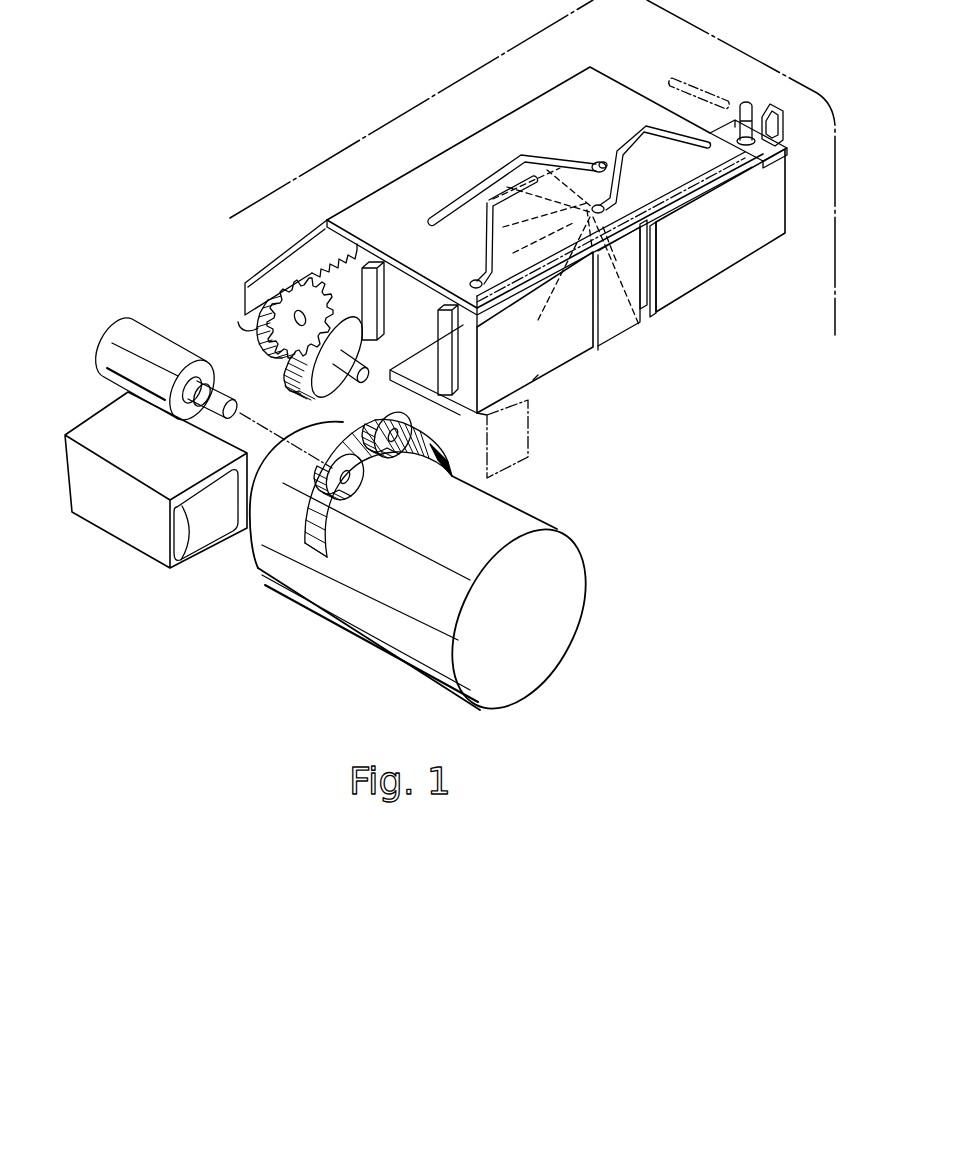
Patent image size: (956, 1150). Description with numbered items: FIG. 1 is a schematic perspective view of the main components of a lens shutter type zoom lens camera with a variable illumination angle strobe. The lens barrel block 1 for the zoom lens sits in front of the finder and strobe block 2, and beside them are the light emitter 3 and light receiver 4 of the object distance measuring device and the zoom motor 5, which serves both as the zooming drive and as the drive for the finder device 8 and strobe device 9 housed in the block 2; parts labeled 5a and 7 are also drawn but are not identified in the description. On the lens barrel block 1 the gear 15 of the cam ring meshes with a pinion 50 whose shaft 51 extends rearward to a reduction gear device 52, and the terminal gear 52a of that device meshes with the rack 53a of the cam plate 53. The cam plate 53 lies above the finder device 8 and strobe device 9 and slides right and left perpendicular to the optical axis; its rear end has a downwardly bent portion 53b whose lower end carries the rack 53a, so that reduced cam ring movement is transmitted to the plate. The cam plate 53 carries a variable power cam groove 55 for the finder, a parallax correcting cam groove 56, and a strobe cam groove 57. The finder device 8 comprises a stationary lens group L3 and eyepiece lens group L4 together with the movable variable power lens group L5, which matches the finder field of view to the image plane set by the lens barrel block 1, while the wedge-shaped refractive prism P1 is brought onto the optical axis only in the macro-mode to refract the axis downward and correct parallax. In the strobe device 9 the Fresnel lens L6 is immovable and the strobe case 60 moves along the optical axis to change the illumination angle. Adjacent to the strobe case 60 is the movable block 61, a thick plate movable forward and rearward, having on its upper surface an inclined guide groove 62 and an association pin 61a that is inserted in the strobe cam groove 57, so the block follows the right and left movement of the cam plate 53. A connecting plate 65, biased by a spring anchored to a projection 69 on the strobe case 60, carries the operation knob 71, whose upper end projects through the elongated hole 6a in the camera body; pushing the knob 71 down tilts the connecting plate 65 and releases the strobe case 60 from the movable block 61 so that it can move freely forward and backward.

The lens barrel block 1 is at (567, 612).
The finder and strobe block 2 is at (516, 243).
The light emitter 3 is at (517, 447).
The light receiver 4 is at (203, 545).
The zoom motor 5 is at (112, 375).
The motor shaft 5a is at (240, 403).
The elongated hole 6a is at (697, 73).
The gear 7 is at (330, 453).
The finder device 8 is at (548, 356).
The strobe device 9 is at (678, 272).
The gear 15 is at (330, 545).
The pinion 50 is at (393, 445).
The shaft 51 is at (350, 340).
The reduction gear device 52 is at (311, 372).
The terminal gear 52a is at (293, 297).
The cam plate 53 is at (606, 87).
The rack 53a is at (238, 322).
The downwardly bent portion 53b is at (313, 255).
The variable power cam groove 55 is at (481, 242).
The parallax correcting cam groove 56 is at (528, 153).
The strobe cam groove 57 is at (648, 124).
The strobe case 60 is at (722, 123).
The movable block 61 is at (615, 313).
The association pin 61a is at (598, 200).
The inclined guide groove 62 is at (634, 306).
The connecting plate 65 is at (755, 146).
The projection 69 is at (783, 113).
The operation knob 71 is at (752, 103).
The stationary lens group L3 is at (533, 380).
The eyepiece lens group L4 is at (390, 277).
The movable variable power lens group L5 is at (440, 323).
The Fresnel lens L6 is at (667, 294).
The refractive prism P1 is at (430, 407).